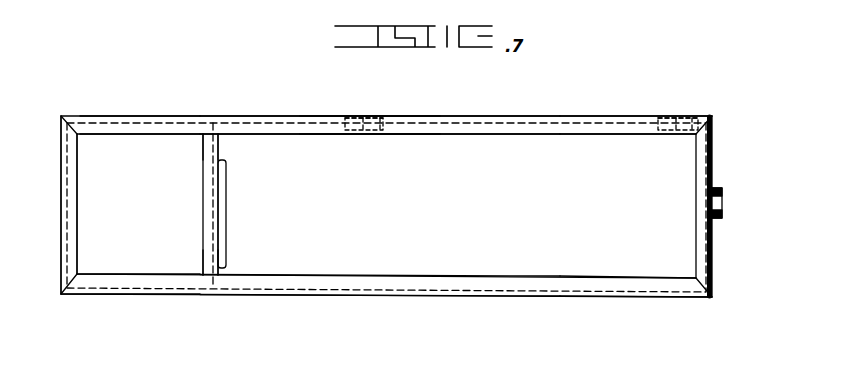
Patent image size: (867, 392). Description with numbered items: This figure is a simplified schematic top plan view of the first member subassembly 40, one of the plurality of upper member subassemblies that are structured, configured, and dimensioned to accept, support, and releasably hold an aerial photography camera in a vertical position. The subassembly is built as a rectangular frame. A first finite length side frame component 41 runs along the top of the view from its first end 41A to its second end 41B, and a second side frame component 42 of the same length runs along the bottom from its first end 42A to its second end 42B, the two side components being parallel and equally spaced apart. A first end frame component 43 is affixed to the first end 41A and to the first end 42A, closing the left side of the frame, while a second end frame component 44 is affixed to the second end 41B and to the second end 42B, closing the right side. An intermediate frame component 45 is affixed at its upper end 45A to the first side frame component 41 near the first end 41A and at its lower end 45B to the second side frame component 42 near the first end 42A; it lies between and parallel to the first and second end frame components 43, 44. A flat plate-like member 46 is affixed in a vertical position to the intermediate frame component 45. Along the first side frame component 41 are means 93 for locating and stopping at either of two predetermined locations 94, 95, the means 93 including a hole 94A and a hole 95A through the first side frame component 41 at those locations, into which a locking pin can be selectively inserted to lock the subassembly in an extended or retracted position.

The first member subassembly 40 is at (548, 106).
The first side frame component 41 is at (458, 128).
The first end of first side frame component 41A is at (88, 123).
The second end of first side frame component 41B is at (708, 124).
The second side frame component 42 is at (385, 291).
The first end of second side frame component 42A is at (82, 286).
The second end of second side frame component 42B is at (690, 288).
The first end frame component 43 is at (64, 196).
The second end frame component 44 is at (705, 238).
The intermediate frame component 45 is at (203, 189).
The upper end of intermediate frame component 45A is at (212, 123).
The lower end of intermediate frame component 45B is at (197, 284).
The flat plate-like member 46 is at (226, 206).
The means for locating and stopping 93 is at (465, 148).
The first predetermined location 94 is at (362, 131).
The hole at first predetermined location 94A is at (360, 122).
The second predetermined location 95 is at (670, 134).
The hole at second predetermined location 95A is at (678, 124).